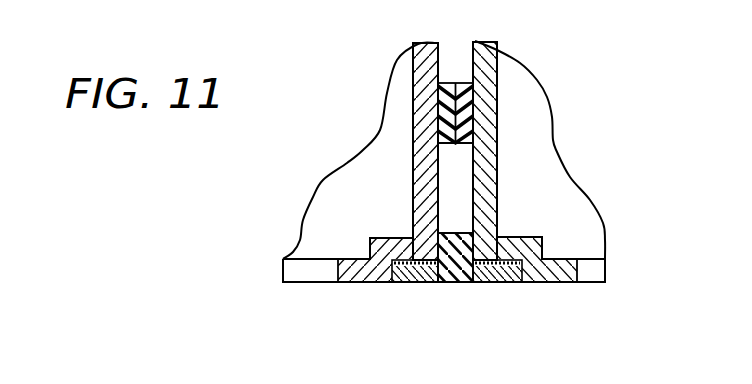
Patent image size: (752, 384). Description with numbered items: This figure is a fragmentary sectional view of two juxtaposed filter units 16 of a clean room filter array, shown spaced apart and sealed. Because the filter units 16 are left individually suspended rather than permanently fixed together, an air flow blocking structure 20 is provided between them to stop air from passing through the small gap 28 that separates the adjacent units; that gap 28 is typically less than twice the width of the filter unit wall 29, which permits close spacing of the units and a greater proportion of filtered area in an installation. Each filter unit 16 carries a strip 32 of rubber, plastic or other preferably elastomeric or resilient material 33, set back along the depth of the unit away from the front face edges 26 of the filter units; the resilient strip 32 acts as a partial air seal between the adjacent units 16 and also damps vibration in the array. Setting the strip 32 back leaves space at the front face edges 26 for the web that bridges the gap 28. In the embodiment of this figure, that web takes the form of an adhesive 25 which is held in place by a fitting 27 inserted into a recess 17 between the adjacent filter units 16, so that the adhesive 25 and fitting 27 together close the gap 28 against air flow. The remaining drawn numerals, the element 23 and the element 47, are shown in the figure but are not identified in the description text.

The housing wall 16 is at (323, 181).
The sealing gasket 17 is at (515, 284).
The base plate 20 is at (455, 291).
The center support block 23 is at (457, 246).
The sealing gasket 25 is at (490, 285).
The base plate end portion 26 is at (380, 285).
The base flange 27 is at (410, 285).
The cavity 28 is at (455, 169).
The splice insert 29 is at (443, 111).
The left post wall 32 is at (445, 106).
The right post wall 33 is at (480, 98).
The base plate end portion 47 is at (585, 285).